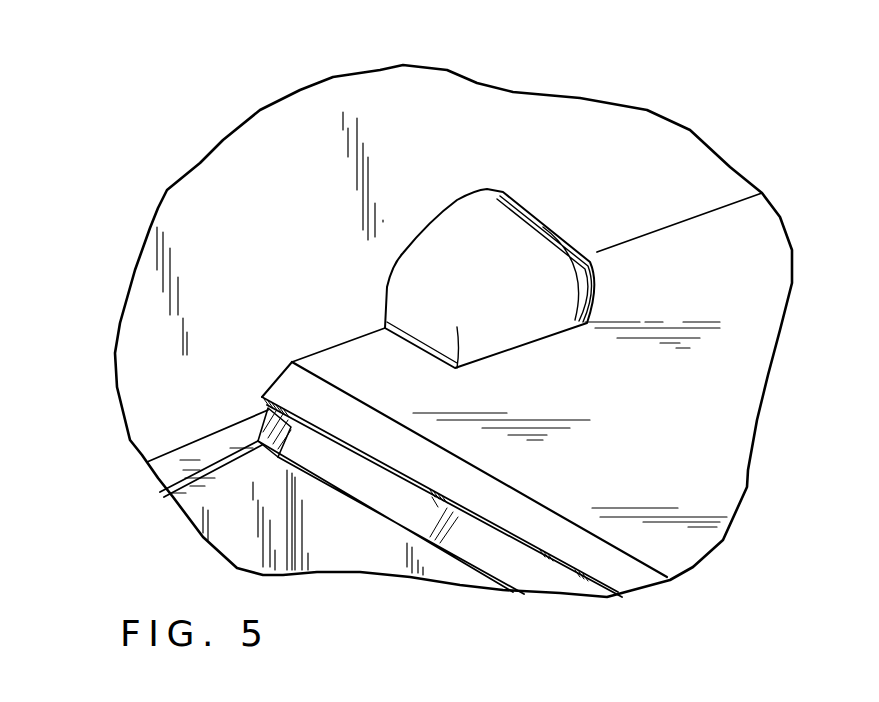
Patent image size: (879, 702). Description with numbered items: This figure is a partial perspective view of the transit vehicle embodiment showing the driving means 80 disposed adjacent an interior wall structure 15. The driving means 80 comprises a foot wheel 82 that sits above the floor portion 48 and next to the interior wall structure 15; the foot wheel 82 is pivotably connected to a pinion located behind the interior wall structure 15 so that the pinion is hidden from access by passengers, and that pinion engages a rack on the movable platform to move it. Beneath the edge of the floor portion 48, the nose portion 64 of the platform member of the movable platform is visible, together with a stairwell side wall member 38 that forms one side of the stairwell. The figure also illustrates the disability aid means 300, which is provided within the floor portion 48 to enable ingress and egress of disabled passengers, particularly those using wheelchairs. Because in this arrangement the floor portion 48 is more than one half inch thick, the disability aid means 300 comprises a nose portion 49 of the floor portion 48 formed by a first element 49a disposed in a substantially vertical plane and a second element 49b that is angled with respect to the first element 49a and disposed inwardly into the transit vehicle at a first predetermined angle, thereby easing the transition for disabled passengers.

The driving means 80 is at (486, 134).
The foot wheel 82 is at (505, 193).
The interior wall structure 15 is at (292, 261).
The floor portion 48 is at (698, 406).
The nose portion 49 is at (540, 385).
The first element 49a is at (267, 403).
The second element 49b is at (282, 383).
The disability aid means 300 is at (233, 376).
The nose portion 64 is at (490, 553).
The stairwell side wall member 38 is at (247, 533).